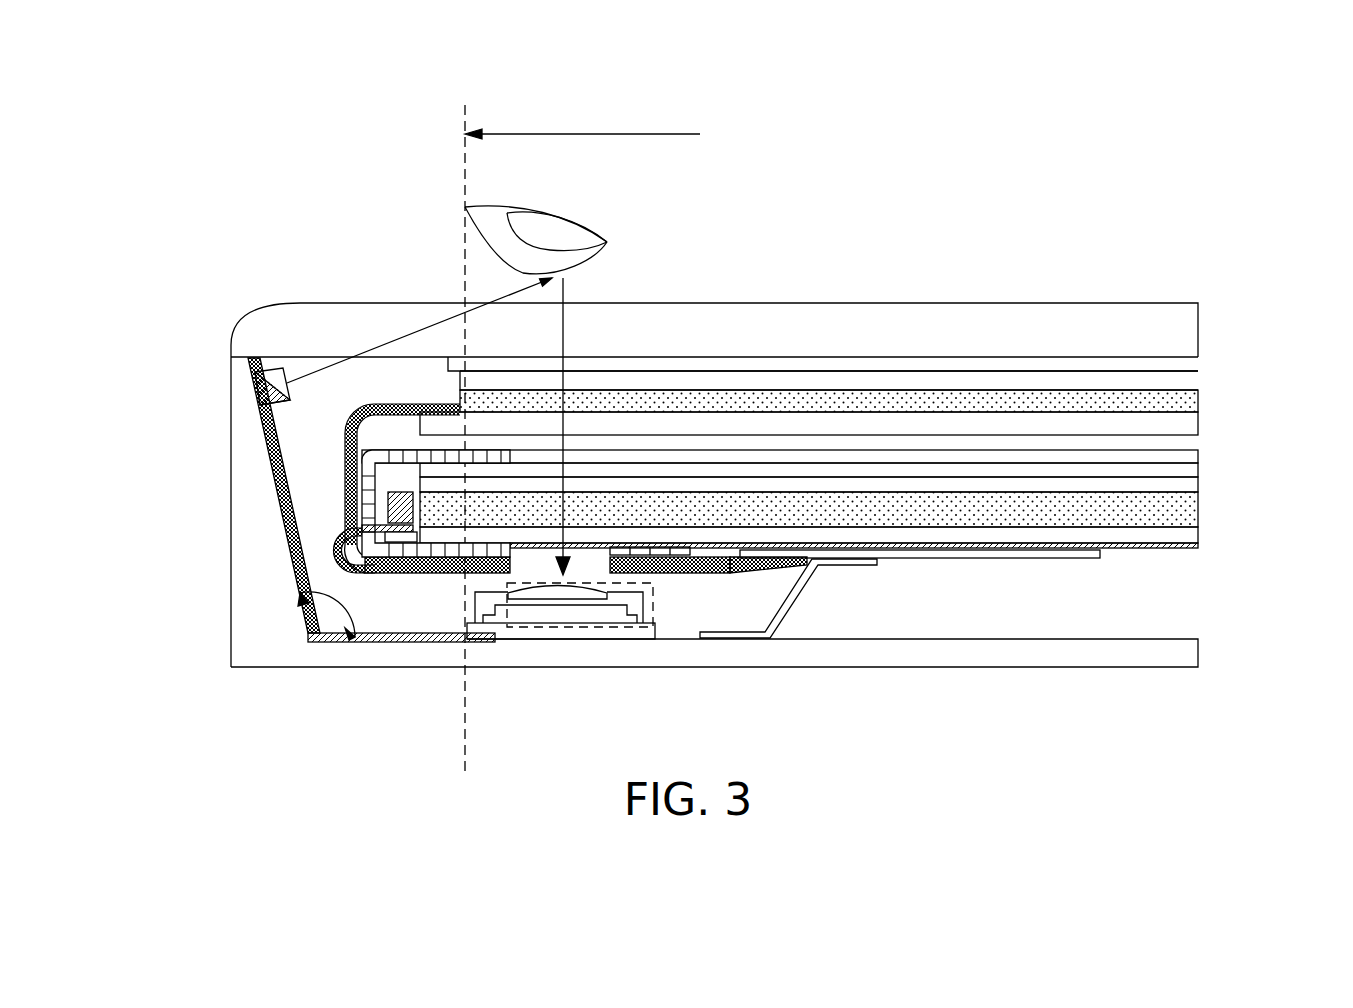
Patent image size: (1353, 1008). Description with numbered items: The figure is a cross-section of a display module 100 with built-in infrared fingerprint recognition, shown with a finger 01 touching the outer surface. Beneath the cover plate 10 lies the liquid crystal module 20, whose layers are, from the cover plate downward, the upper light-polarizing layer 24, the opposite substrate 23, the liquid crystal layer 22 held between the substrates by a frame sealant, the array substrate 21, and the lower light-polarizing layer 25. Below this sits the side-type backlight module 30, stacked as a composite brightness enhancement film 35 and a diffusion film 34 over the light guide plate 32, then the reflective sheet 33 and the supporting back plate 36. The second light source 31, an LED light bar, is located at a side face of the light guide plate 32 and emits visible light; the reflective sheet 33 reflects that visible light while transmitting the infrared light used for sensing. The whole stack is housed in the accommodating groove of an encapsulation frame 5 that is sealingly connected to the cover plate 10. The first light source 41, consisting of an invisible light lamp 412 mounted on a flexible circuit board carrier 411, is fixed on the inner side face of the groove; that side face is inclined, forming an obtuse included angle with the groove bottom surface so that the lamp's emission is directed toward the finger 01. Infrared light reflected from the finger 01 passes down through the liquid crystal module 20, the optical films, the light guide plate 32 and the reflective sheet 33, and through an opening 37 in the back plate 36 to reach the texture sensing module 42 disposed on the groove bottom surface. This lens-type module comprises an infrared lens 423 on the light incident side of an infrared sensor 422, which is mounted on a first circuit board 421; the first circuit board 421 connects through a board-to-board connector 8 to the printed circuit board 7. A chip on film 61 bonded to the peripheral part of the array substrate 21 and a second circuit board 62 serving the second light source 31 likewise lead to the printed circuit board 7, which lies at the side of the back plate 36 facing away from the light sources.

The display module 100 is at (282, 133).
The finger 01 is at (557, 232).
The cover plate 10 is at (1150, 345).
The liquid crystal module 20 is at (1262, 325).
The upper light-polarizing layer 24 is at (1175, 357).
The opposite substrate 23 is at (1175, 375).
The liquid crystal layer 22 is at (1175, 395).
The array substrate 21 is at (1175, 420).
The lower light-polarizing layer 25 is at (1180, 440).
The backlight module 30 is at (1262, 455).
The composite brightness enhancement film 35 is at (1172, 470).
The diffusion film 34 is at (1172, 485).
The light guide plate 32 is at (1172, 512).
The reflective sheet 33 is at (1172, 533).
The back plate 36 is at (1163, 550).
The first light source 41 is at (176, 355).
The invisible light lamp 412 is at (255, 373).
The flexible circuit board carrier 411 is at (252, 398).
The encapsulation frame 5 is at (298, 648).
The chip on film 61 is at (350, 422).
The second circuit board 62 is at (340, 547).
The second light source 31 is at (362, 487).
The opening 37 is at (588, 557).
The texture sensing module 42 is at (490, 730).
The first circuit board 421 is at (605, 637).
The infrared sensor 422 is at (558, 615).
The infrared lens 423 is at (527, 593).
The board-to-board connector 8 is at (797, 607).
The printed circuit board 7 is at (925, 555).